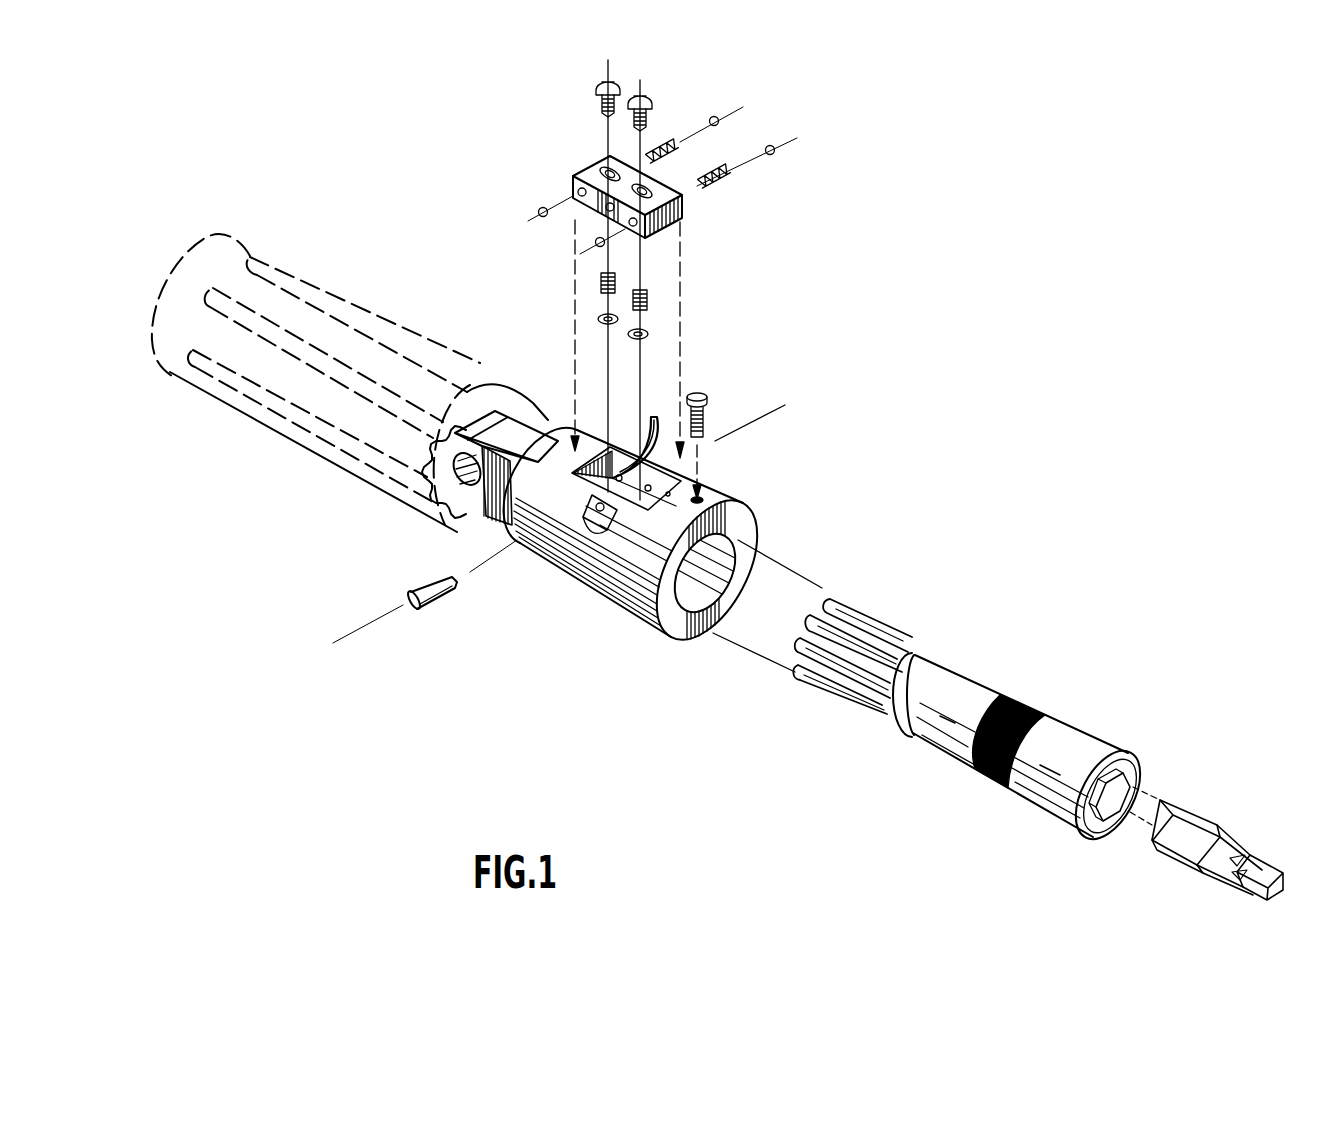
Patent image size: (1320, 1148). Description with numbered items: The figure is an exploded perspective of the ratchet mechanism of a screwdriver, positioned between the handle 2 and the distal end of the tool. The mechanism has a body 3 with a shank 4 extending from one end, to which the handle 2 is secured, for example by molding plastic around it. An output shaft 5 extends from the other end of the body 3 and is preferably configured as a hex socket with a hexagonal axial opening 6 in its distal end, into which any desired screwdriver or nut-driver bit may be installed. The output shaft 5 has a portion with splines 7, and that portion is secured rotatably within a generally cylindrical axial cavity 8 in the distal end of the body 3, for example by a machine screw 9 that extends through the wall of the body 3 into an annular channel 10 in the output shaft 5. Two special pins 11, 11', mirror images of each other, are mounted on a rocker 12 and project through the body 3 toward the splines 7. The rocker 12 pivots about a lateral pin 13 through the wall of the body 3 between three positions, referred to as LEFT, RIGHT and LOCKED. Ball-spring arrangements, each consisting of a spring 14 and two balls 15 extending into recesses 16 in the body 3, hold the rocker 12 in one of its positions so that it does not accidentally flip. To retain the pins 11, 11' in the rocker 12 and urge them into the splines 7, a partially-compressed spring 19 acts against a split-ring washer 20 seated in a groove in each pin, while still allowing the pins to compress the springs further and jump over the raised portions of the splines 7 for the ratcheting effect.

The handle 2 is at (285, 262).
The body 3 is at (615, 597).
The shank 4 is at (492, 514).
The output shaft 5 is at (1007, 683).
The hexagonal axial opening 6 is at (1143, 780).
The splines 7 is at (863, 627).
The axial cavity 8 is at (713, 578).
The machine screw 9 is at (707, 413).
The annular channel 10 is at (947, 662).
The pin 11 is at (683, 103).
The pin 11' is at (567, 106).
The rocker 12 is at (682, 207).
The lateral pin 13 is at (420, 607).
The spring 14 is at (731, 168).
The balls 15 is at (722, 119).
The recesses 16 is at (643, 432).
The spring 19 is at (600, 285).
The split-ring washer 20 is at (600, 320).